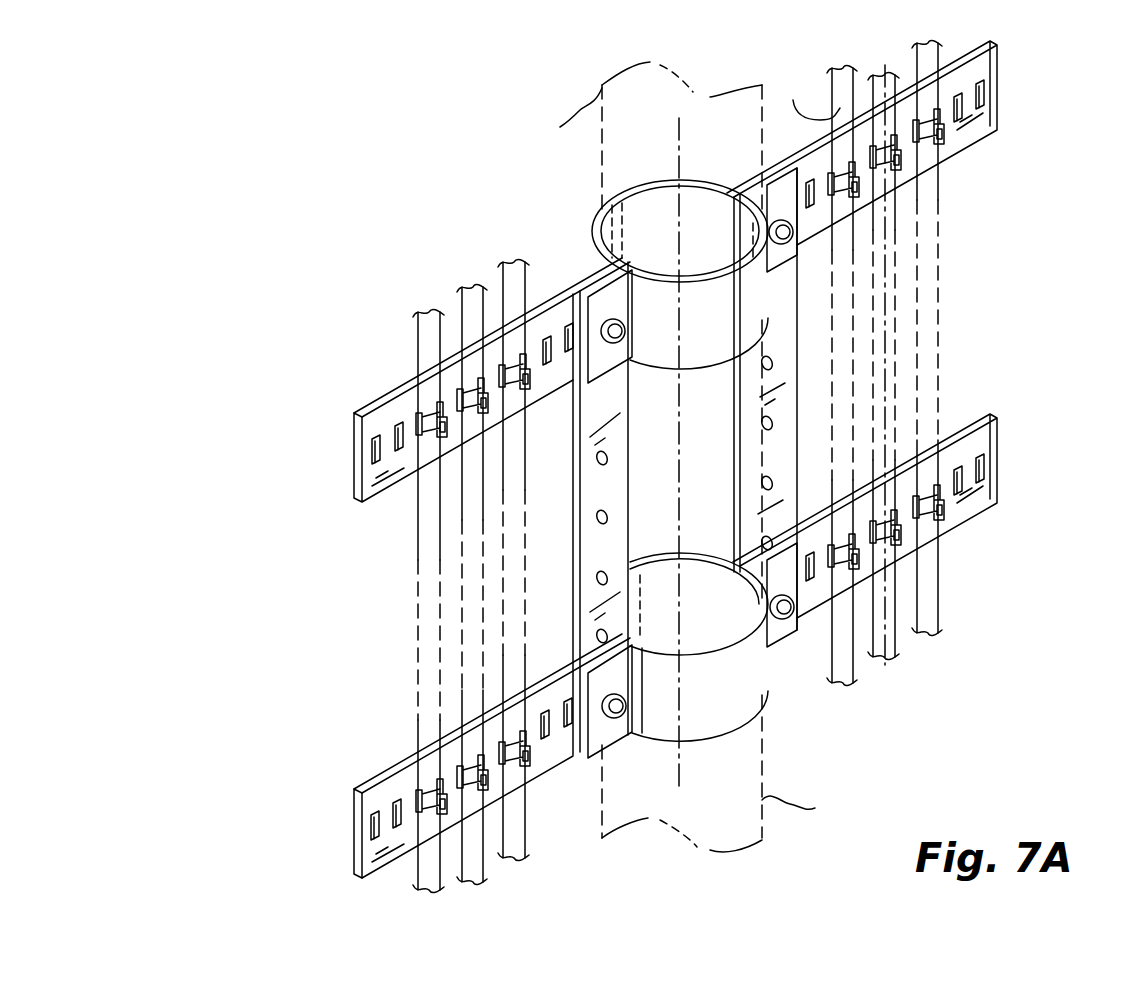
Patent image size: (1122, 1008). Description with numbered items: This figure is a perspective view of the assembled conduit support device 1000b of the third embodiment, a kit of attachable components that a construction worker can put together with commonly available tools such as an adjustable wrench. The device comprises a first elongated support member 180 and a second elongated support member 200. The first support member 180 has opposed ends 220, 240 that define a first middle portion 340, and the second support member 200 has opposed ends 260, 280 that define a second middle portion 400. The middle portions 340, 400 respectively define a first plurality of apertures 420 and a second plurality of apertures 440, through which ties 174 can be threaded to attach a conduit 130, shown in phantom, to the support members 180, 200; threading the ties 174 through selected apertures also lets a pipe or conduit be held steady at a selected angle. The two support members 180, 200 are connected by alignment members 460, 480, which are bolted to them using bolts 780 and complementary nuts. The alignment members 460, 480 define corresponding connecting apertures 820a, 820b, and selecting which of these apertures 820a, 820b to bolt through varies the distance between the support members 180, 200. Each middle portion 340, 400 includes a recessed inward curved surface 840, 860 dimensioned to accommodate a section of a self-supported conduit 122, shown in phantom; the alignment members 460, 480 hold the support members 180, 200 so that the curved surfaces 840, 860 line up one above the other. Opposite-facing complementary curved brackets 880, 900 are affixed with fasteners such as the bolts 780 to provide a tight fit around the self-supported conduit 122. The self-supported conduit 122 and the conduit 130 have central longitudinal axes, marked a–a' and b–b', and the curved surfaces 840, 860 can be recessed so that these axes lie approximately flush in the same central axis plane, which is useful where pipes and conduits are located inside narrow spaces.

The conduit support device kit 1000b is at (318, 115).
The self-supported conduit 122 is at (557, 124).
The first middle portion 340 is at (792, 162).
The conduit 130 is at (813, 95).
The first plurality of apertures 420 is at (960, 92).
The opposed end of first support member 240 is at (997, 95).
The ties 174 is at (940, 140).
The recessed inward curved surface 840 is at (650, 207).
The first elongated support member 180 is at (542, 312).
The opposed end of first support member 220 is at (358, 412).
The curved bracket 880 is at (722, 337).
The connecting apertures of second alignment member 820b is at (773, 362).
The opposed end of second support member 280 is at (997, 440).
The second alignment member 480 is at (738, 420).
The second plurality of apertures 440 is at (983, 468).
The first alignment member 460 is at (617, 473).
The recessed inward curved surface 860 is at (702, 578).
The connecting apertures of first alignment member 820a is at (600, 580).
The second elongated support member 200 is at (400, 768).
The second middle portion 400 is at (562, 757).
The bolts 780 is at (782, 620).
The opposed end of second support member 260 is at (353, 835).
The curved bracket 900 is at (728, 713).